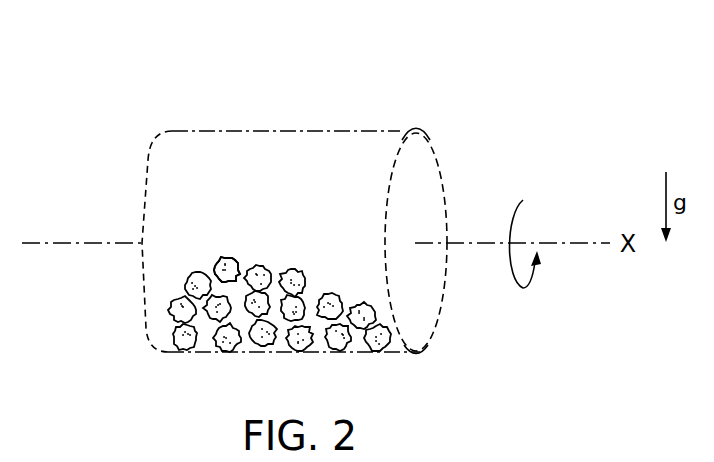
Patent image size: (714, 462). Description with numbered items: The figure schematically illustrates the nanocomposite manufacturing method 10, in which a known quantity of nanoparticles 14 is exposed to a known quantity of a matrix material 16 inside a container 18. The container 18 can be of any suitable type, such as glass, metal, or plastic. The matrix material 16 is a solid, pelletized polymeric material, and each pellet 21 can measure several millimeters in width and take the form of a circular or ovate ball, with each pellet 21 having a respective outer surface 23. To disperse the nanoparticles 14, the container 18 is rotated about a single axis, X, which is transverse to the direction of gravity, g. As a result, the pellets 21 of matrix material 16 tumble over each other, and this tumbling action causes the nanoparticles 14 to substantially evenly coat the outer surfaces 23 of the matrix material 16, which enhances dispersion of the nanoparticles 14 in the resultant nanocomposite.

The manufacturing method 10 is at (355, 96).
The nanoparticles 14 is at (190, 280).
The matrix material 16 is at (217, 265).
The container 18 is at (401, 131).
The pellet 21 is at (190, 280).
The outer surface 23 is at (219, 282).